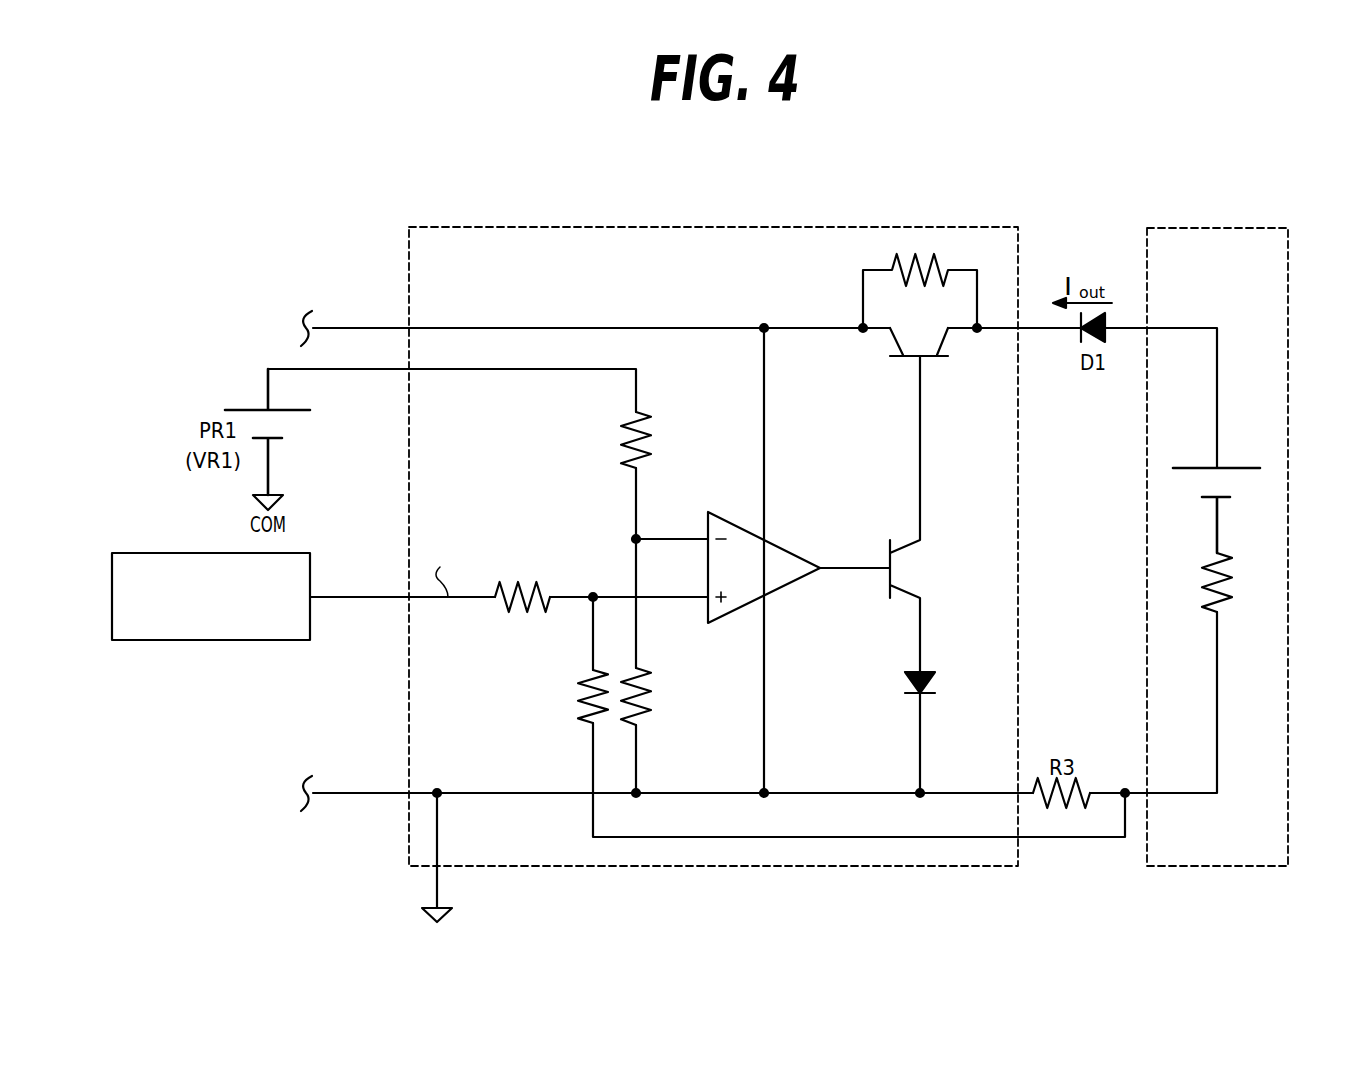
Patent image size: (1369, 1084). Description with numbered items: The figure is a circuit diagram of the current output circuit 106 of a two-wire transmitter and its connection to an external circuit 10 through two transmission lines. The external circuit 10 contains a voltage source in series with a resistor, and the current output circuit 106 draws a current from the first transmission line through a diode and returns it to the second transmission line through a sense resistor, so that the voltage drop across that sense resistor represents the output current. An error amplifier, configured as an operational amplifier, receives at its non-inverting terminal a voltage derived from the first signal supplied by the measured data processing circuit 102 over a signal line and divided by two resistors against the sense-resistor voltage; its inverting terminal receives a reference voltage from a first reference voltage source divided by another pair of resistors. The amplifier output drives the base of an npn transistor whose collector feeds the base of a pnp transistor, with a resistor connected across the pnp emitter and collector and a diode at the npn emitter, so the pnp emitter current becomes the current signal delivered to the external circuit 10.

The external circuit 10 is at (1213, 228).
The measured data processing circuit 102 is at (187, 553).
The current output circuit 106 is at (528, 227).